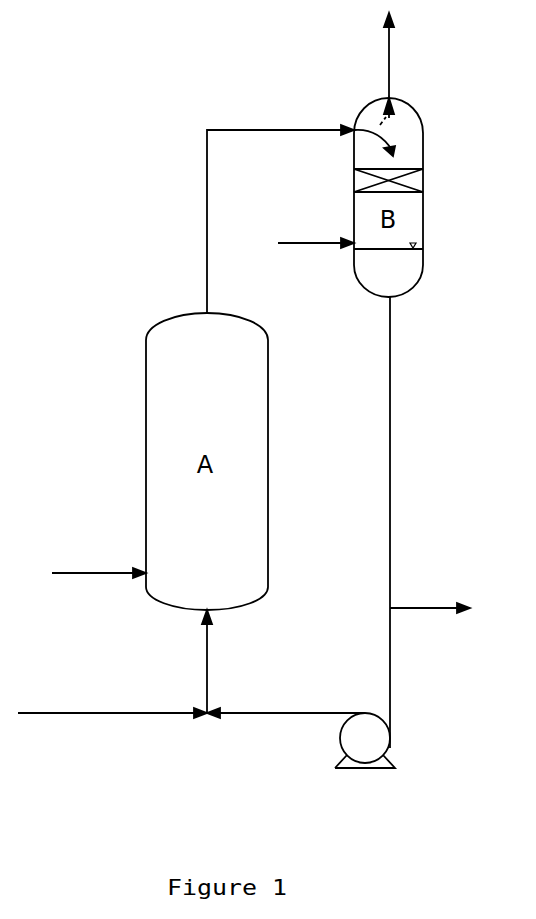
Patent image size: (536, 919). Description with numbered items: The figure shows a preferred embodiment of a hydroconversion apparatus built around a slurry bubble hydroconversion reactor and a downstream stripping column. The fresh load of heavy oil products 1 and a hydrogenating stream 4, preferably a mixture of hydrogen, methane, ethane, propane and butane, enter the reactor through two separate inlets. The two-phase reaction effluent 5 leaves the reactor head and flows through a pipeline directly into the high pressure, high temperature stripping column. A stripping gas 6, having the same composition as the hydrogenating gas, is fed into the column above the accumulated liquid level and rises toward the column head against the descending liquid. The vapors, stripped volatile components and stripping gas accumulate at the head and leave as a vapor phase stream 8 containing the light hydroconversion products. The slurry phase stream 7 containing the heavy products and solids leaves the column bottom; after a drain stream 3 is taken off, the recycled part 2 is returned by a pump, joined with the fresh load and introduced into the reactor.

The fresh load of heavy oil products 1 is at (115, 664).
The recycled part 2 is at (286, 706).
The drain stream 3 is at (430, 598).
The hydrogenating stream 4 is at (99, 563).
The two-phase reaction effluent 5 is at (265, 219).
The stripping gas 6 is at (316, 232).
The slurry phase stream containing heavy products and solids 7 is at (405, 522).
The vapor phase stream containing light hydroconversion products 8 is at (374, 55).